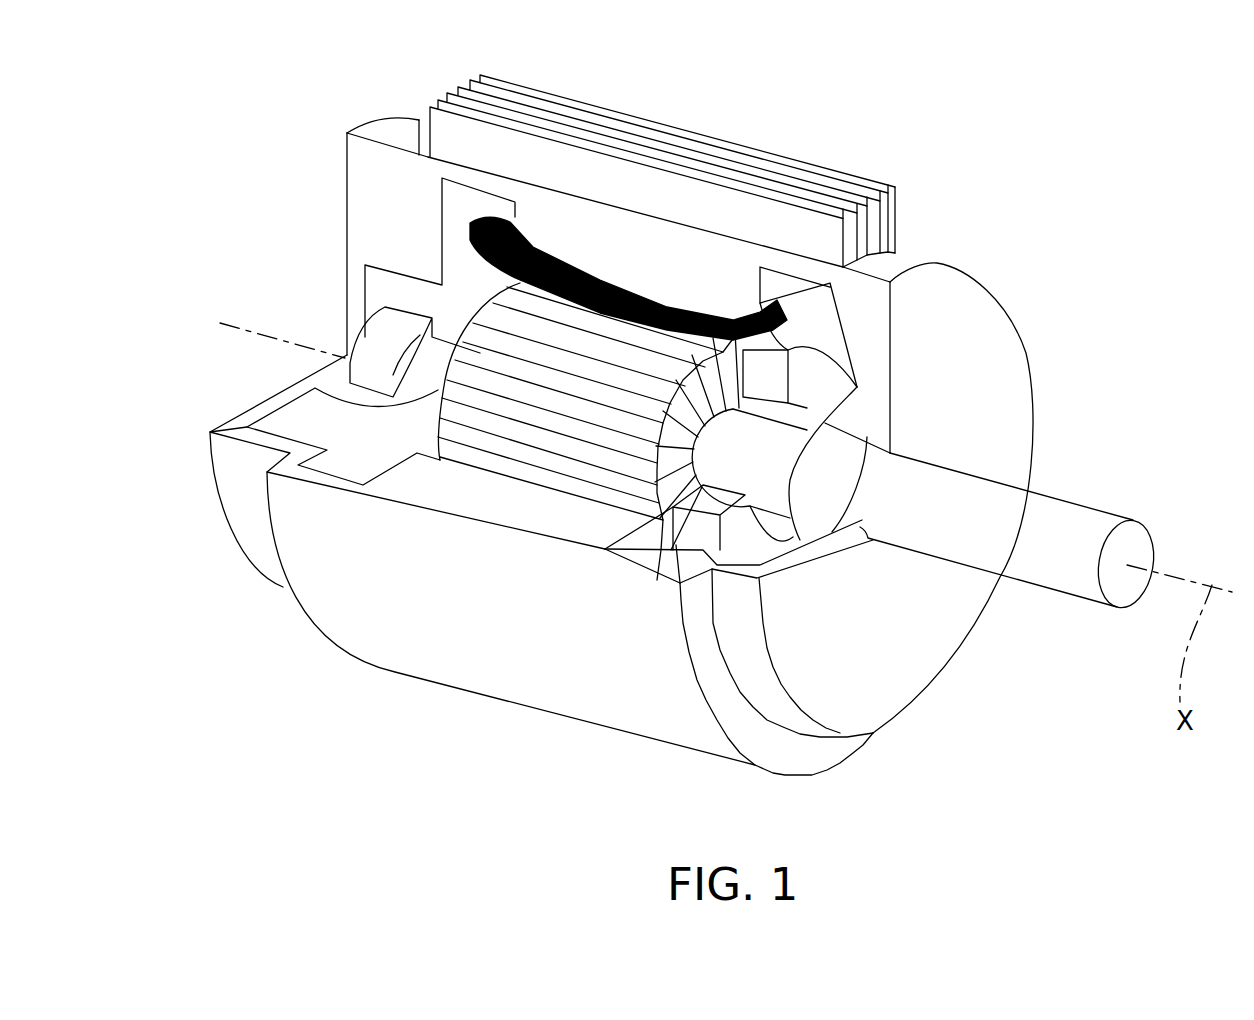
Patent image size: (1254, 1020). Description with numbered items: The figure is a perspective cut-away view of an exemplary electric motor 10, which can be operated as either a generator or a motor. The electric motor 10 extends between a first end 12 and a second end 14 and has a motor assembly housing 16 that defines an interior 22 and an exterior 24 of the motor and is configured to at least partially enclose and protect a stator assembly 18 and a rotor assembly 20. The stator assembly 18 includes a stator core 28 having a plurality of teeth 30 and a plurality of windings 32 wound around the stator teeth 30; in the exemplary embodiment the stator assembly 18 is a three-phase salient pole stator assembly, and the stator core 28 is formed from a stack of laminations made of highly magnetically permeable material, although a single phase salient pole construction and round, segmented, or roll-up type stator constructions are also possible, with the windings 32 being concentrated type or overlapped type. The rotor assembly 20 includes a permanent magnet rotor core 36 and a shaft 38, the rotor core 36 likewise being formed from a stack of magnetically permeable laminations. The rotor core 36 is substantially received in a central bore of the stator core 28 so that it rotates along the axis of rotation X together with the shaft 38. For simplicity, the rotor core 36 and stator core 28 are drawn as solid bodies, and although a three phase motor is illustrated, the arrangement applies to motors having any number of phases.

The electric motor 10 is at (1000, 158).
The first end 12 is at (253, 125).
The second end 14 is at (1035, 275).
The motor assembly housing 16 is at (857, 177).
The stator assembly 18 is at (555, 262).
The rotor assembly 20 is at (557, 430).
The interior 22 is at (397, 228).
The exterior 24 is at (377, 118).
The stator core 28 is at (590, 282).
The stator teeth 30 is at (780, 303).
The windings 32 is at (667, 293).
The rotor core 36 is at (657, 577).
The shaft 38 is at (1102, 507).